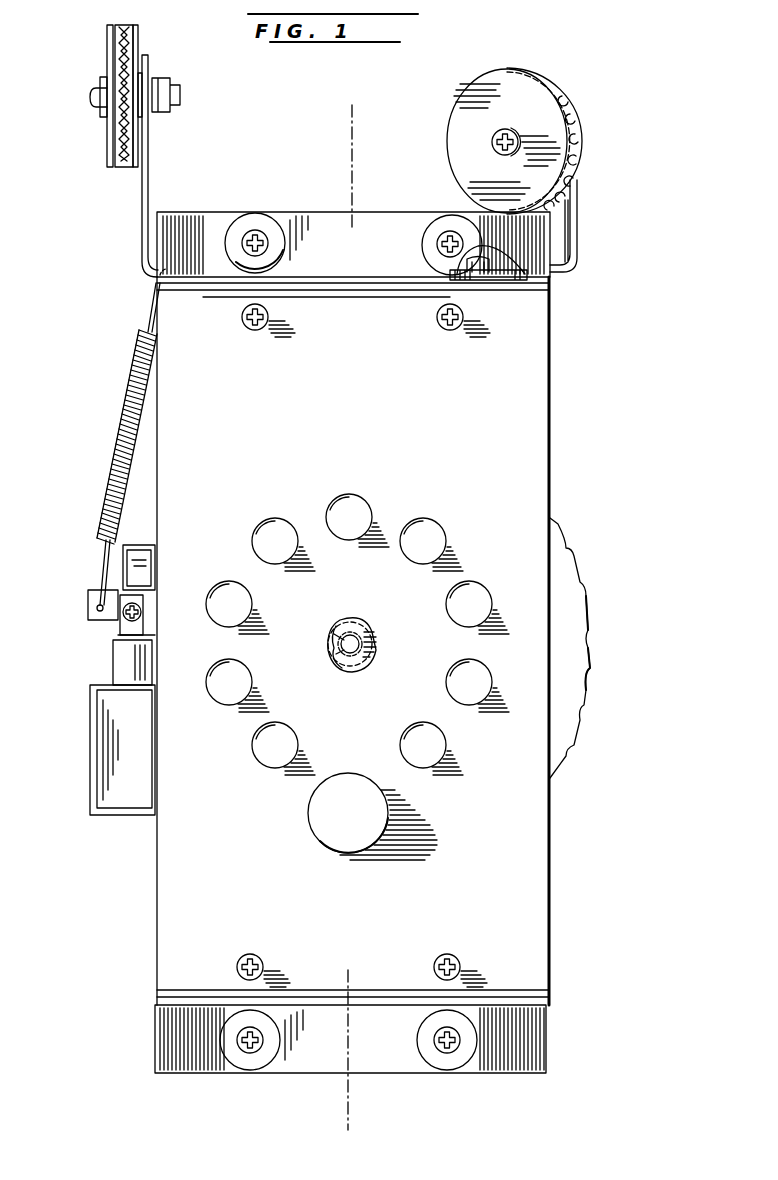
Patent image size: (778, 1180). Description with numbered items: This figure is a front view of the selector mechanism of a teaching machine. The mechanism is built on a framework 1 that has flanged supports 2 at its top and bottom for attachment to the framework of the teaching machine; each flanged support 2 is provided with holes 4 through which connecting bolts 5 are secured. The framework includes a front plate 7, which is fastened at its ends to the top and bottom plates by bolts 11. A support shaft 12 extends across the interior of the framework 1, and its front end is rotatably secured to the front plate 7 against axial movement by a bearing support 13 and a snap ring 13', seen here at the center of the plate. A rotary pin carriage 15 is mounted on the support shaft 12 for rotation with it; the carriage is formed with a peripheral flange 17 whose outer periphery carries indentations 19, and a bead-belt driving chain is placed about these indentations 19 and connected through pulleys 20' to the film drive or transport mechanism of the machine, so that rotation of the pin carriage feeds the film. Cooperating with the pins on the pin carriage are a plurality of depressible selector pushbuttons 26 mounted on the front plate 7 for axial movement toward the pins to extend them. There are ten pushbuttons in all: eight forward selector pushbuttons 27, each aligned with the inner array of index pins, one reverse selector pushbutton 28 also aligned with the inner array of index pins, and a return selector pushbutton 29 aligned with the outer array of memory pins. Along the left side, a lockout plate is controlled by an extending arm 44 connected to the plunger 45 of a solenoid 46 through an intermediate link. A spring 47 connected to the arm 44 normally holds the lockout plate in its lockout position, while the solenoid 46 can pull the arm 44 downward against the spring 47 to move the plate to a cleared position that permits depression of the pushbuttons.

The framework 1 is at (564, 396).
The flanged supports 2 is at (190, 228).
The holes 4 is at (255, 243).
The connecting bolts 5 is at (450, 244).
The front plate 7 is at (390, 416).
The bolts 11 is at (244, 325).
The support shaft 12 is at (357, 638).
The bearing support 13 is at (375, 645).
The snap ring 13' is at (322, 631).
The rotary pin carriage 15 is at (600, 576).
The peripheral flange 17 is at (590, 655).
The indentations 19 is at (580, 710).
The pulleys 20' is at (340, 152).
The selector pushbuttons 26 is at (418, 489).
The forward selector pushbuttons 27 is at (416, 541).
The reverse selector pushbutton 28 is at (412, 738).
The return selector pushbutton 29 is at (338, 812).
The extending arm 44 is at (98, 614).
The plunger 45 is at (128, 680).
The solenoid 46 is at (118, 732).
The spring 47 is at (118, 442).